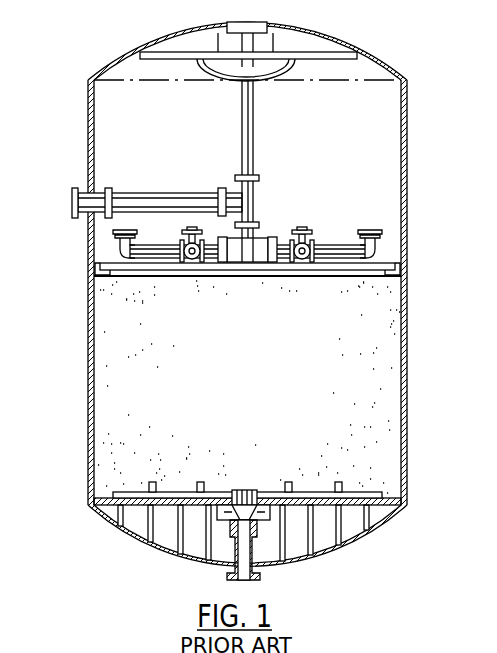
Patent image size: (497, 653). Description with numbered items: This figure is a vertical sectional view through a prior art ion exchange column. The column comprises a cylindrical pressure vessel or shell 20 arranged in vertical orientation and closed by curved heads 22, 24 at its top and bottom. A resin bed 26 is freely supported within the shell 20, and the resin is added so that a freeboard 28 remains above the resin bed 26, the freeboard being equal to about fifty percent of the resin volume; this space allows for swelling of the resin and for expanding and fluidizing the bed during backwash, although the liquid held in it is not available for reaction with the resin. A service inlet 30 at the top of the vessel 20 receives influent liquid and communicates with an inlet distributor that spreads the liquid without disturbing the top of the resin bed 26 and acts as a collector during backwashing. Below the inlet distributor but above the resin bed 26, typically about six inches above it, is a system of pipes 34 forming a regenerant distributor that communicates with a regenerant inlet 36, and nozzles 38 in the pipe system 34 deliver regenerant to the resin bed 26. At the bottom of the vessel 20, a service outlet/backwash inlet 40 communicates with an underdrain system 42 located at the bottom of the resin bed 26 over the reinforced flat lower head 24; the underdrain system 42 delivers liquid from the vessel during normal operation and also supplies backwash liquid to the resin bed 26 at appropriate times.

The cylindrical pressure vessel or shell 20 is at (419, 202).
The curved head 22 is at (365, 41).
The curved head 24 is at (345, 551).
The resin bed 26 is at (374, 387).
The freeboard 28 is at (380, 130).
The service inlet 30 is at (262, 27).
The system of pipes 34 is at (279, 177).
The regenerant inlet 36 is at (67, 202).
The nozzles 38 is at (168, 222).
The service outlet/backwash inlet 40 is at (259, 568).
The underdrain system 42 is at (317, 477).